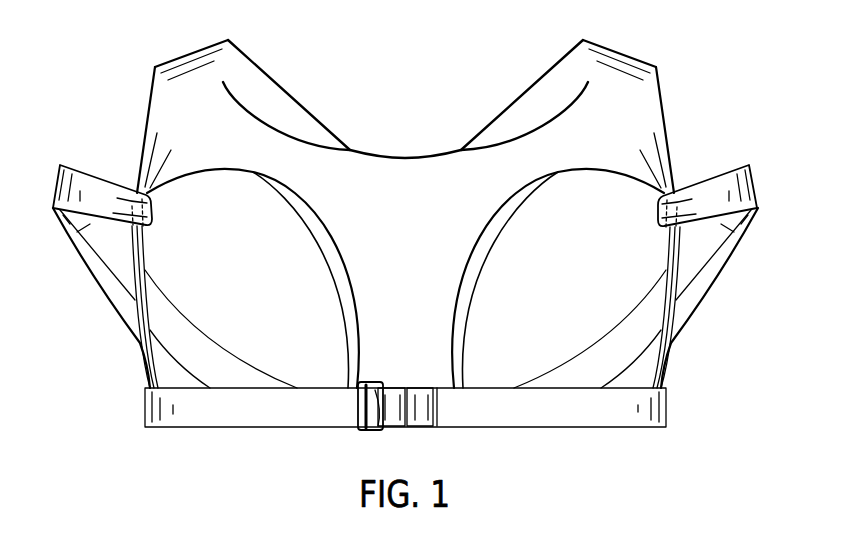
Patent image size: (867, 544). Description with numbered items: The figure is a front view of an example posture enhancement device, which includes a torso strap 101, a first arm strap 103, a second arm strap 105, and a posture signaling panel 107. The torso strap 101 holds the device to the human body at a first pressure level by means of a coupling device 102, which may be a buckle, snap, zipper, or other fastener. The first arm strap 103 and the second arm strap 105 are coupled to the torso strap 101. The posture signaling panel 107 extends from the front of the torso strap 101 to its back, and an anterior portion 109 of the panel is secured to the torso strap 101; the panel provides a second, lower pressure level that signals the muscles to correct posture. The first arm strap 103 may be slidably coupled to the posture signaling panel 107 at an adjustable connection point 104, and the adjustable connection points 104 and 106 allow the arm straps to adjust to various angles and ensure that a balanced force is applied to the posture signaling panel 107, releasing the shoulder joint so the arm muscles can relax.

The torso strap 101 is at (254, 423).
The coupling device 102 is at (372, 430).
The first arm strap 103 is at (103, 187).
The adjustable connection point 104 is at (162, 216).
The second arm strap 105 is at (707, 184).
The adjustable connection point 106 is at (650, 216).
The posture signaling panel 107 is at (223, 82).
The anterior portion 109 is at (416, 229).